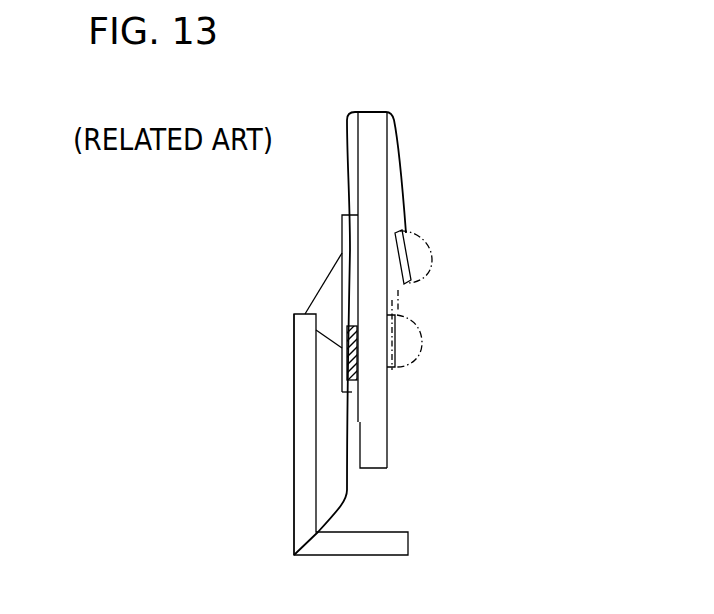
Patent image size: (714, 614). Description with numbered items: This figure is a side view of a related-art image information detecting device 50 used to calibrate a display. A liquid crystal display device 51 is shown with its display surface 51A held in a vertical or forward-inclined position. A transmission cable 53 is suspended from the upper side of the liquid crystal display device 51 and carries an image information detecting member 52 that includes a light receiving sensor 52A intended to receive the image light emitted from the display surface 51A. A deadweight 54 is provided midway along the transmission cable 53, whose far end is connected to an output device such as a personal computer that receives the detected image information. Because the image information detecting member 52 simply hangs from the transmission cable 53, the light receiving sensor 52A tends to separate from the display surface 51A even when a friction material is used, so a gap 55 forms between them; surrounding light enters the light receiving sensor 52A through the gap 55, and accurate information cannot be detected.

The image information detecting device 50 is at (433, 123).
The liquid crystal display device 51 is at (386, 473).
The display surface 51A is at (385, 451).
The image information detecting member 52 is at (433, 270).
The light receiving sensor 52A is at (405, 284).
The transmission cable 53 is at (403, 172).
The deadweight 54 is at (343, 363).
The gap 55 is at (393, 260).